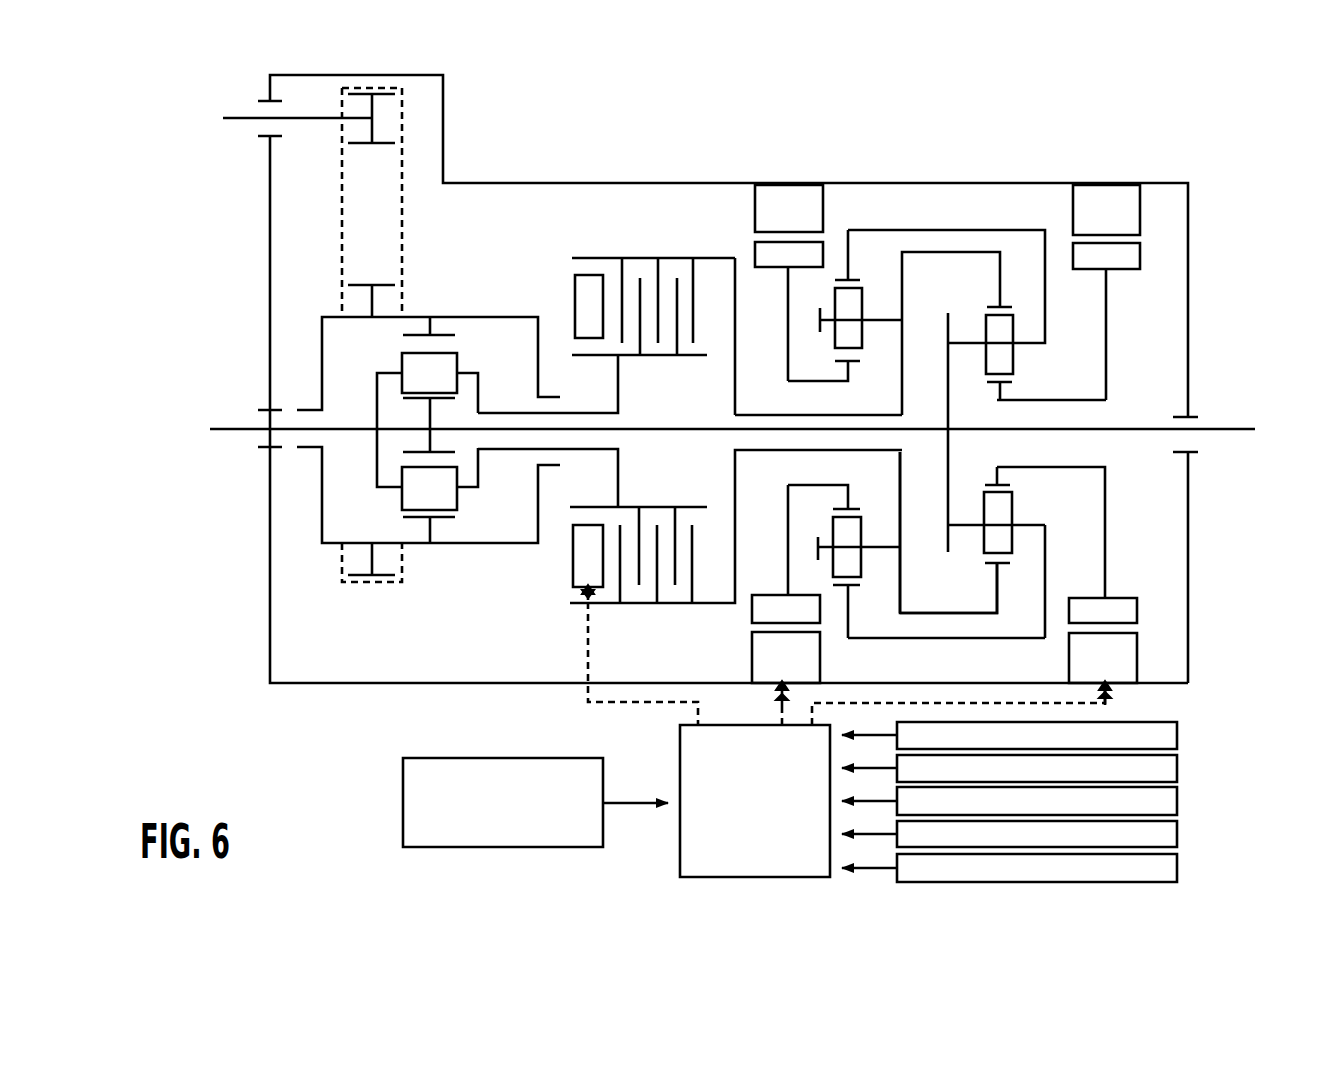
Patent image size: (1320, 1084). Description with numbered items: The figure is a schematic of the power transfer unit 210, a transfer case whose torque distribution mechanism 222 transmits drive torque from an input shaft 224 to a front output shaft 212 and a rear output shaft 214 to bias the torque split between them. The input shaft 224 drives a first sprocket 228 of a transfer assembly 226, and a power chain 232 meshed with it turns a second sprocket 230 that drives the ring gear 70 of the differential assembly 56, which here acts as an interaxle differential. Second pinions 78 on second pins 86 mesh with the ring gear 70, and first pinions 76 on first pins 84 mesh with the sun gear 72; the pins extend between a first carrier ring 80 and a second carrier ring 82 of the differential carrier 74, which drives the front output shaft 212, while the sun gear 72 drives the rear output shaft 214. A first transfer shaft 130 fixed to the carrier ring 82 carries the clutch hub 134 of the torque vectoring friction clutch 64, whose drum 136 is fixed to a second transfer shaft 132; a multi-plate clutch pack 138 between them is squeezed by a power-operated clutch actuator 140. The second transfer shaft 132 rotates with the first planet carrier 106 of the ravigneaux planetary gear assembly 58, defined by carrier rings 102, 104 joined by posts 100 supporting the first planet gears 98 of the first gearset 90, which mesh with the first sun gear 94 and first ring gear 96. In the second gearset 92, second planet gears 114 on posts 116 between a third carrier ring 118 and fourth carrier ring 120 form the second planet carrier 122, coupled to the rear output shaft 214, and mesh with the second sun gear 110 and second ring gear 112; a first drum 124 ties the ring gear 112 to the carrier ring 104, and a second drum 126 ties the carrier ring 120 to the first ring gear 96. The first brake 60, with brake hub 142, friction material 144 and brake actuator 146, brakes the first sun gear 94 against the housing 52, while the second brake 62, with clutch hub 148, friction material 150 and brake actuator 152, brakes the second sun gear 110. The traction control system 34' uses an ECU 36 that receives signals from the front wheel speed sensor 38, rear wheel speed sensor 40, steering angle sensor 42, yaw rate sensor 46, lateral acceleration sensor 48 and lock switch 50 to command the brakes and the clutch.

The traction control system 34' is at (837, 772).
The electronic control unit 36 is at (697, 748).
The front wheel speed sensor 38 is at (1177, 740).
The rear wheel speed sensor 40 is at (1177, 773).
The steering angle sensor 42 is at (1177, 806).
The yaw rate sensor 46 is at (1177, 839).
The lateral acceleration sensor 48 is at (1177, 873).
The lock switch 50 is at (585, 775).
The axle housing 52 is at (1190, 333).
The differential assembly 56 is at (319, 548).
The planetary gear assembly 58 is at (966, 216).
The first brake 60 is at (769, 177).
The second brake 62 is at (1129, 176).
The torque vectoring friction clutch 64 is at (641, 244).
The ring gear 70 is at (431, 532).
The sun gear 72 is at (430, 418).
The differential carrier 74 is at (371, 387).
The first pinions 76 is at (451, 366).
The second pinions 78 is at (403, 494).
The first carrier ring 80 is at (382, 463).
The second carrier ring 82 is at (480, 470).
The first pins 84 is at (468, 378).
The second pins 86 is at (465, 490).
The first gearset 90 is at (871, 539).
The second gearset 92 is at (979, 390).
The first sun gear 94 is at (847, 502).
The first ring gear 96 is at (849, 229).
The first planet gears 98 is at (848, 336).
The post 100 is at (818, 540).
The first carrier ring 102 is at (820, 311).
The second carrier ring 104 is at (901, 577).
The first planet carrier 106 is at (894, 604).
The second sun gear 110 is at (999, 388).
The second ring gear 112 is at (996, 593).
The second planet gears 114 is at (1004, 510).
The post 116 is at (970, 523).
The third carrier ring 118 is at (922, 427).
The fourth carrier ring 120 is at (1046, 575).
The second planet carrier 122 is at (961, 327).
The first drum 124 is at (918, 252).
The second drum 126 is at (927, 639).
The first transfer shaft 130 is at (600, 412).
The second transfer shaft 132 is at (760, 414).
The clutch hub 134 is at (619, 378).
The drum 136 is at (715, 257).
The multi-plate clutch pack 138 is at (678, 547).
The clutch actuator 140 is at (576, 563).
The brake hub 142 is at (734, 328).
The friction material 144 is at (760, 610).
The brake actuator 146 is at (760, 657).
The clutch hub 148 is at (1107, 329).
The friction material 150 is at (1137, 260).
The brake actuator 152 is at (1138, 664).
The power transfer unit 210 is at (1219, 124).
The front output shaft 212 is at (226, 427).
The rear output shaft 214 is at (1222, 428).
The torque distribution mechanism 222 is at (916, 177).
The input shaft 224 is at (312, 120).
The transfer assembly 226 is at (431, 167).
The first sprocket 228 is at (378, 144).
The second sprocket 230 is at (380, 578).
The power chain 232 is at (403, 555).